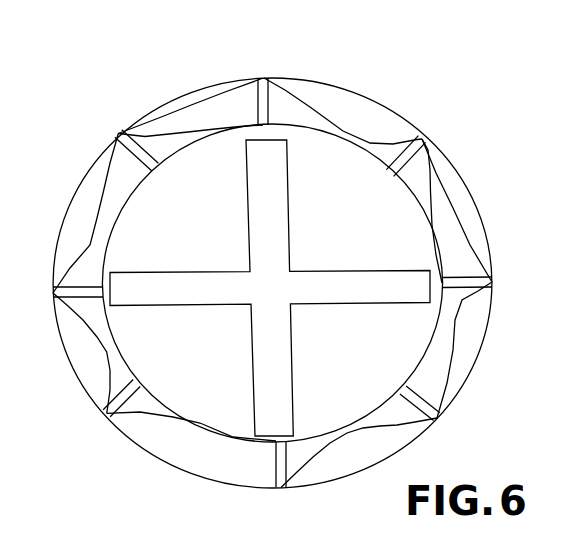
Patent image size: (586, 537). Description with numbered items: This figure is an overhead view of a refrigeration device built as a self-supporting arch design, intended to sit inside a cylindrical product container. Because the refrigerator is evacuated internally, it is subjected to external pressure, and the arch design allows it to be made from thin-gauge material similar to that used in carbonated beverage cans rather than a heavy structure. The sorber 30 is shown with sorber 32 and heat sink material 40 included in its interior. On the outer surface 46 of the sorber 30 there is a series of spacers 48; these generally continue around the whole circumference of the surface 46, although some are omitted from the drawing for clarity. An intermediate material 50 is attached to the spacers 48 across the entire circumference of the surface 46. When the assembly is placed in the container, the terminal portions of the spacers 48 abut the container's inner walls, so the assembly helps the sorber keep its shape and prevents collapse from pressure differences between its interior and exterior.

The sorber 30 is at (301, 257).
The sorber 32 is at (400, 283).
The heat sink material 40 is at (373, 348).
The outer surface 46 is at (431, 168).
The spacers 48 is at (269, 91).
The intermediate material 50 is at (460, 237).